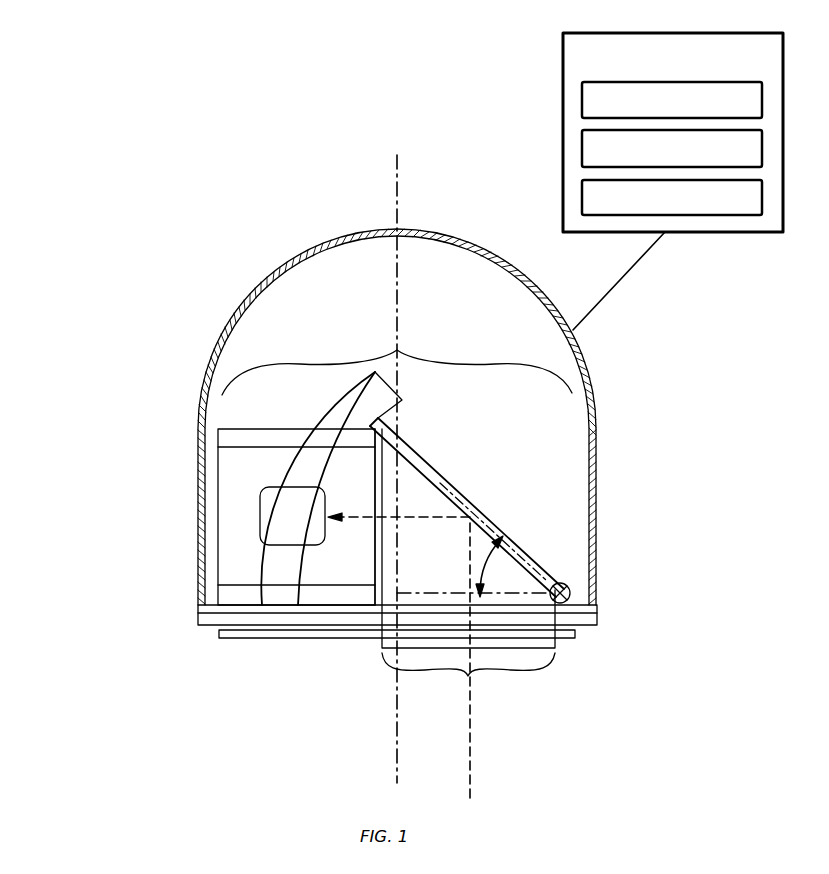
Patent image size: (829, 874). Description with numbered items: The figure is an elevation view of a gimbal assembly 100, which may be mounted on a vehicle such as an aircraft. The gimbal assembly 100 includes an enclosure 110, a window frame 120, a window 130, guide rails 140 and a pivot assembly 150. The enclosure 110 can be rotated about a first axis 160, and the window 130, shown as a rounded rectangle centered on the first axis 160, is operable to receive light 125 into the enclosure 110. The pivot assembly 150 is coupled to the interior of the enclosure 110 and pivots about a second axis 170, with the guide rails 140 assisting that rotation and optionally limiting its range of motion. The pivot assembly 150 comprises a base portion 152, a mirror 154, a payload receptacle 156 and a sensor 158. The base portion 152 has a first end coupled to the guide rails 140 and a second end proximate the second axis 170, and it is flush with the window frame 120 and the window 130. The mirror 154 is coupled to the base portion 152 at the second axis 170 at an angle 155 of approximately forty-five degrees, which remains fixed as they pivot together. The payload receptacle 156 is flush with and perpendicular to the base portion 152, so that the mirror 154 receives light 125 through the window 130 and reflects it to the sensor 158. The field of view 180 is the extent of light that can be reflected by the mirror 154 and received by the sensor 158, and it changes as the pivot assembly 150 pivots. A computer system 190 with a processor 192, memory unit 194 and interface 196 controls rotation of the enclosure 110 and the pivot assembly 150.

The gimbal assembly 100 is at (210, 154).
The enclosure 110 is at (228, 320).
The window frame 120 is at (200, 627).
The light 125 is at (470, 762).
The window 130 is at (297, 640).
The guide rails 140 is at (290, 462).
The pivot assembly 150 is at (397, 374).
The base portion 152 is at (545, 645).
The mirror 154 is at (450, 482).
The angle 155 is at (500, 548).
The payload receptacle 156 is at (245, 428).
The sensor 158 is at (262, 510).
The first axis of rotation 160 is at (396, 168).
The second axis 170 is at (568, 588).
The field of view 180 is at (468, 689).
The computer system 190 is at (673, 181).
The processor 192 is at (672, 100).
The memory unit 194 is at (672, 148).
The interface 196 is at (672, 197).